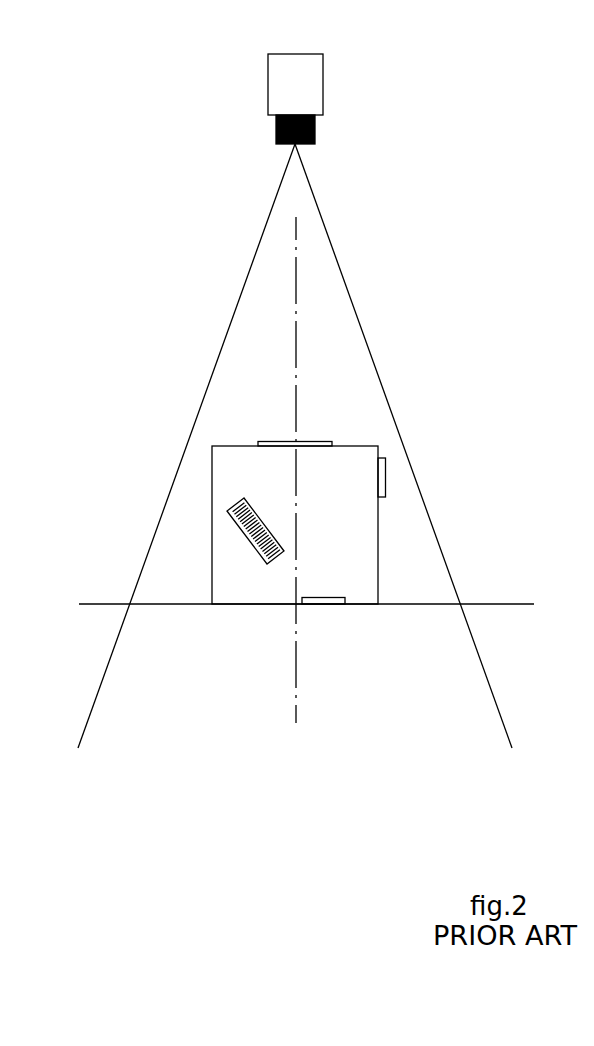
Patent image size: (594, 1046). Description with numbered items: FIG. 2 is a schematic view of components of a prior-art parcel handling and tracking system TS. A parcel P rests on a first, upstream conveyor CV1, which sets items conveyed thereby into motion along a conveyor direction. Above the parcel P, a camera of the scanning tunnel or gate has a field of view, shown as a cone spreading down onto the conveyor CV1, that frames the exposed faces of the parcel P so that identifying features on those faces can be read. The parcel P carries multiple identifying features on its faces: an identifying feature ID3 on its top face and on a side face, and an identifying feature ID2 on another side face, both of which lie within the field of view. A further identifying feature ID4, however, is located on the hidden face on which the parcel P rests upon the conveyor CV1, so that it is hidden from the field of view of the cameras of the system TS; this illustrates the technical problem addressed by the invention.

The parcel handling and tracking system TS is at (472, 250).
The first conveyor CV1 is at (485, 604).
The parcel P is at (342, 523).
The identifying feature ID2 is at (385, 478).
The identifying feature ID3 is at (278, 441).
The identifying feature ID4 is at (332, 603).